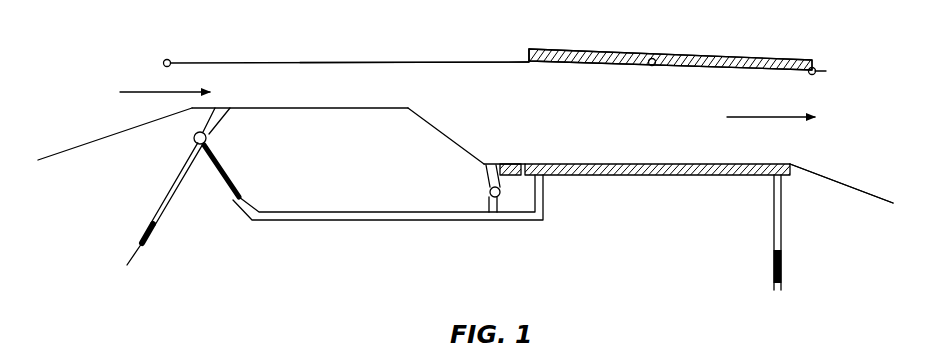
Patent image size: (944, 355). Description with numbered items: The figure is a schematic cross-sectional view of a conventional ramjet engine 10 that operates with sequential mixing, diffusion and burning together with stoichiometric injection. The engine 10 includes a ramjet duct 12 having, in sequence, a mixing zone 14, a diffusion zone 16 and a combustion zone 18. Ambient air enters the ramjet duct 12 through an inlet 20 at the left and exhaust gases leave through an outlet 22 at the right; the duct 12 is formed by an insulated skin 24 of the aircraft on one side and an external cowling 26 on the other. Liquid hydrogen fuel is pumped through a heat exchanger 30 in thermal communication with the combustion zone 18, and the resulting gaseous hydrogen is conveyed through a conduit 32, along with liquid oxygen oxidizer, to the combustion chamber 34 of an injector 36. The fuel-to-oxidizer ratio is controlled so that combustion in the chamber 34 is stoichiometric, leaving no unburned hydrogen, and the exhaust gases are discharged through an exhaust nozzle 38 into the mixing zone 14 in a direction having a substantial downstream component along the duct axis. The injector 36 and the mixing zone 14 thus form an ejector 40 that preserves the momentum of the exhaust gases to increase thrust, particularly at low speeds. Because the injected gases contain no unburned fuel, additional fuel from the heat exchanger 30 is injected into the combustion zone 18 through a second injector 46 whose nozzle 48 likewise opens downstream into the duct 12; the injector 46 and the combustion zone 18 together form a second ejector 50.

The ramjet engine 10 is at (765, 40).
The ramjet duct 12 is at (432, 72).
The mixing zone 14 is at (277, 99).
The diffusion zone 16 is at (503, 127).
The combustion zone 18 is at (682, 134).
The inlet 20 is at (164, 79).
The outlet 22 is at (795, 105).
The insulated skin 24 is at (832, 178).
The external cowling 26 is at (503, 63).
The heat exchanger 30 is at (676, 50).
The conduit 32 is at (325, 222).
The combustion chamber 34 is at (200, 150).
The injector 36 is at (192, 136).
The exhaust nozzle 38 is at (215, 126).
The ejector 40 is at (320, 66).
The second injector 46 is at (490, 186).
The nozzle 48 is at (500, 166).
The ejector 50 is at (560, 108).